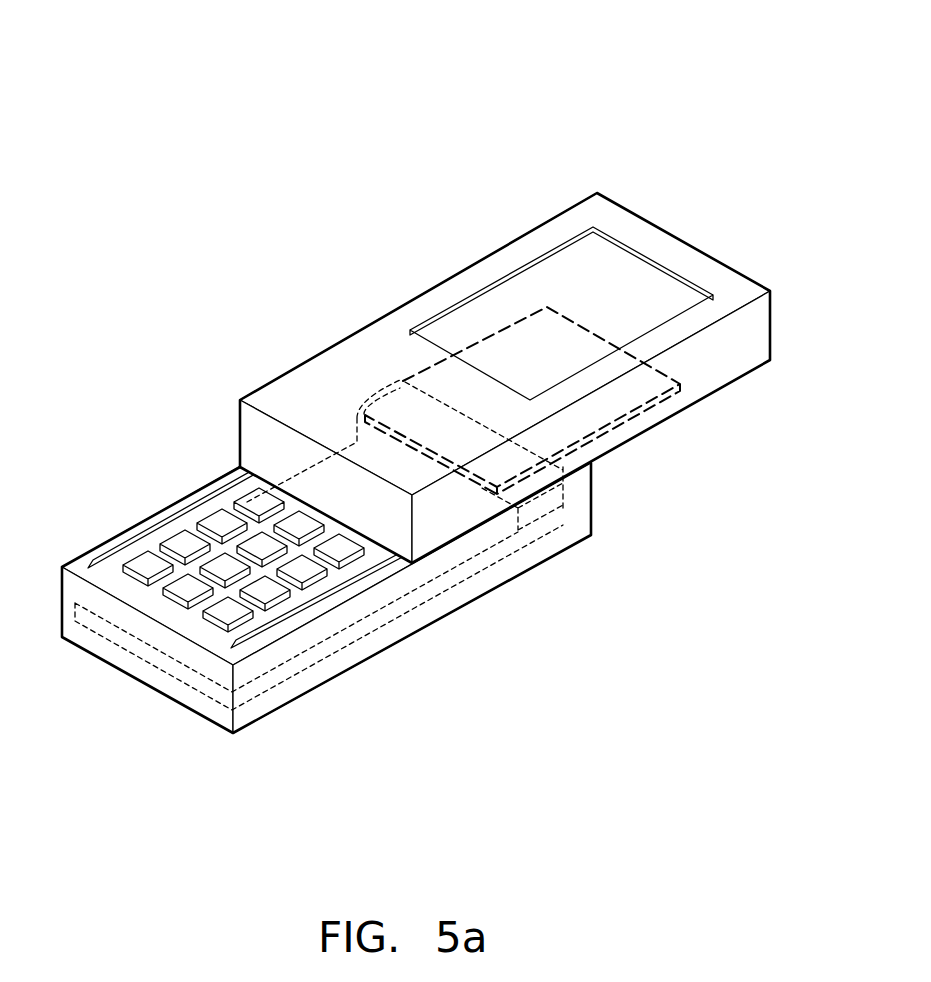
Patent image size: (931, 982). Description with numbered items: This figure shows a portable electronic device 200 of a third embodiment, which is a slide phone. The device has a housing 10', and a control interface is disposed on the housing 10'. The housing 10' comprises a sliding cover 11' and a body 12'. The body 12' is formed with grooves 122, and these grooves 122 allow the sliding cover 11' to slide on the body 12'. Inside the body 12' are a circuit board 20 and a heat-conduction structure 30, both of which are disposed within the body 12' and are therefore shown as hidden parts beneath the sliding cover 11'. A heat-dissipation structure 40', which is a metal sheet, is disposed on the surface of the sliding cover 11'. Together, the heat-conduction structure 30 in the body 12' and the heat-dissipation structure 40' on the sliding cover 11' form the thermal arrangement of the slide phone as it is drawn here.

The portable electronic device 200 is at (412, 391).
The housing 10' is at (412, 476).
The sliding cover 11' is at (505, 424).
The body 12' is at (326, 549).
The circuit board 20 is at (135, 650).
The heat-conduction structure 30 is at (564, 517).
The heat-dissipation structure 40' is at (556, 412).
The grooves 122 is at (120, 552).